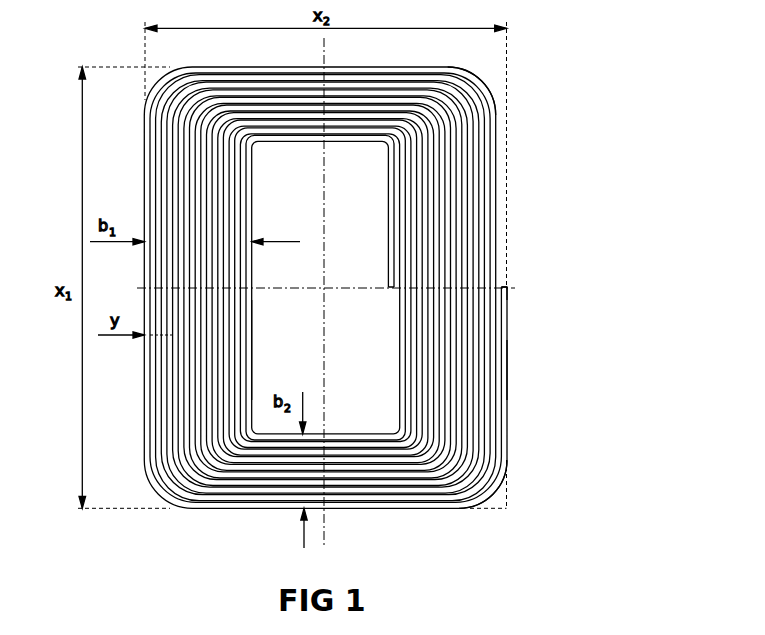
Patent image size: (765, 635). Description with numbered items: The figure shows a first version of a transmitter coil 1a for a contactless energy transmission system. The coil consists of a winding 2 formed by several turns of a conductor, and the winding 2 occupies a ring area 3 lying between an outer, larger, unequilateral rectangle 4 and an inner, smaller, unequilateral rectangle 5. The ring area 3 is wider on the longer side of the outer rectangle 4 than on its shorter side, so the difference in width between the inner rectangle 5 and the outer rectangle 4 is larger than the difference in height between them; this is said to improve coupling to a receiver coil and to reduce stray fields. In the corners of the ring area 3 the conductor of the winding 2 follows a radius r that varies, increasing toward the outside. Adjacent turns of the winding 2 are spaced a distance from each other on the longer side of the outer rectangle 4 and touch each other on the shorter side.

The transmitter coil 1a is at (607, 113).
The winding 2 is at (509, 306).
The ring area 3 is at (501, 376).
The outer rectangle 4 is at (509, 491).
The inner rectangle 5 is at (253, 362).
The radius r is at (496, 104).